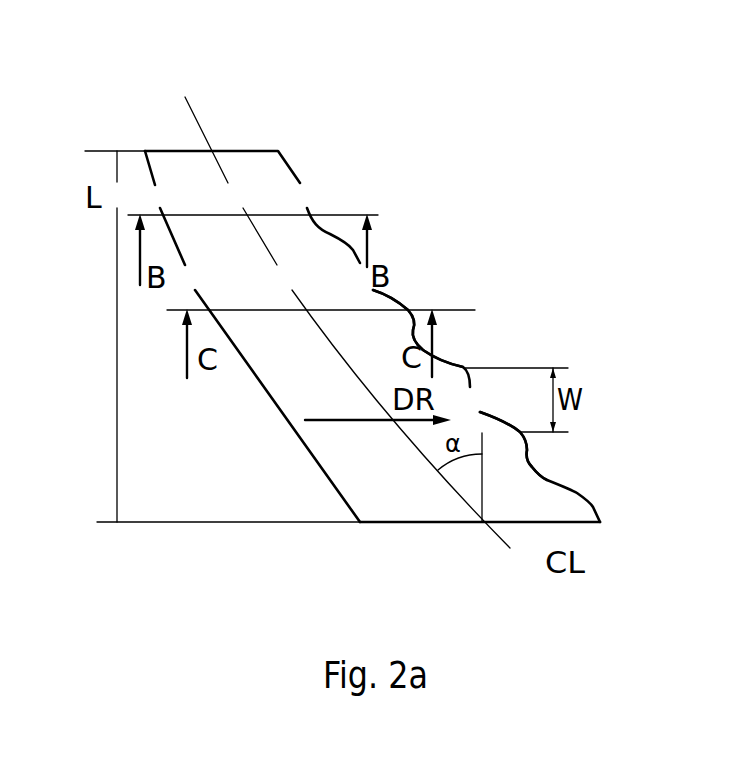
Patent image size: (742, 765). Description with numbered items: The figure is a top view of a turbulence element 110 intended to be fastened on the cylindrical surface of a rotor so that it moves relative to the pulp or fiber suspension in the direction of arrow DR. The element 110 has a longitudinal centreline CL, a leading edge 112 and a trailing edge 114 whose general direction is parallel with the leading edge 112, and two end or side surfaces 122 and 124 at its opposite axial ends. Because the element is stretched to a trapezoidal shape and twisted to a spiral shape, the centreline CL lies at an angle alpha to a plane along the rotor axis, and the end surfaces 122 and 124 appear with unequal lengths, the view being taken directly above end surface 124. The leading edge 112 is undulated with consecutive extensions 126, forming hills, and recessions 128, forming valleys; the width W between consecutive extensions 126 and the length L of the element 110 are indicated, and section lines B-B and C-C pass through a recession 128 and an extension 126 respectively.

The turbulence element 110 is at (322, 377).
The leading edge 112 is at (305, 192).
The trailing edge 114 is at (157, 185).
The end surface 122 is at (233, 148).
The end surface 124 is at (447, 522).
The extension 126 is at (408, 310).
The recession 128 is at (533, 466).